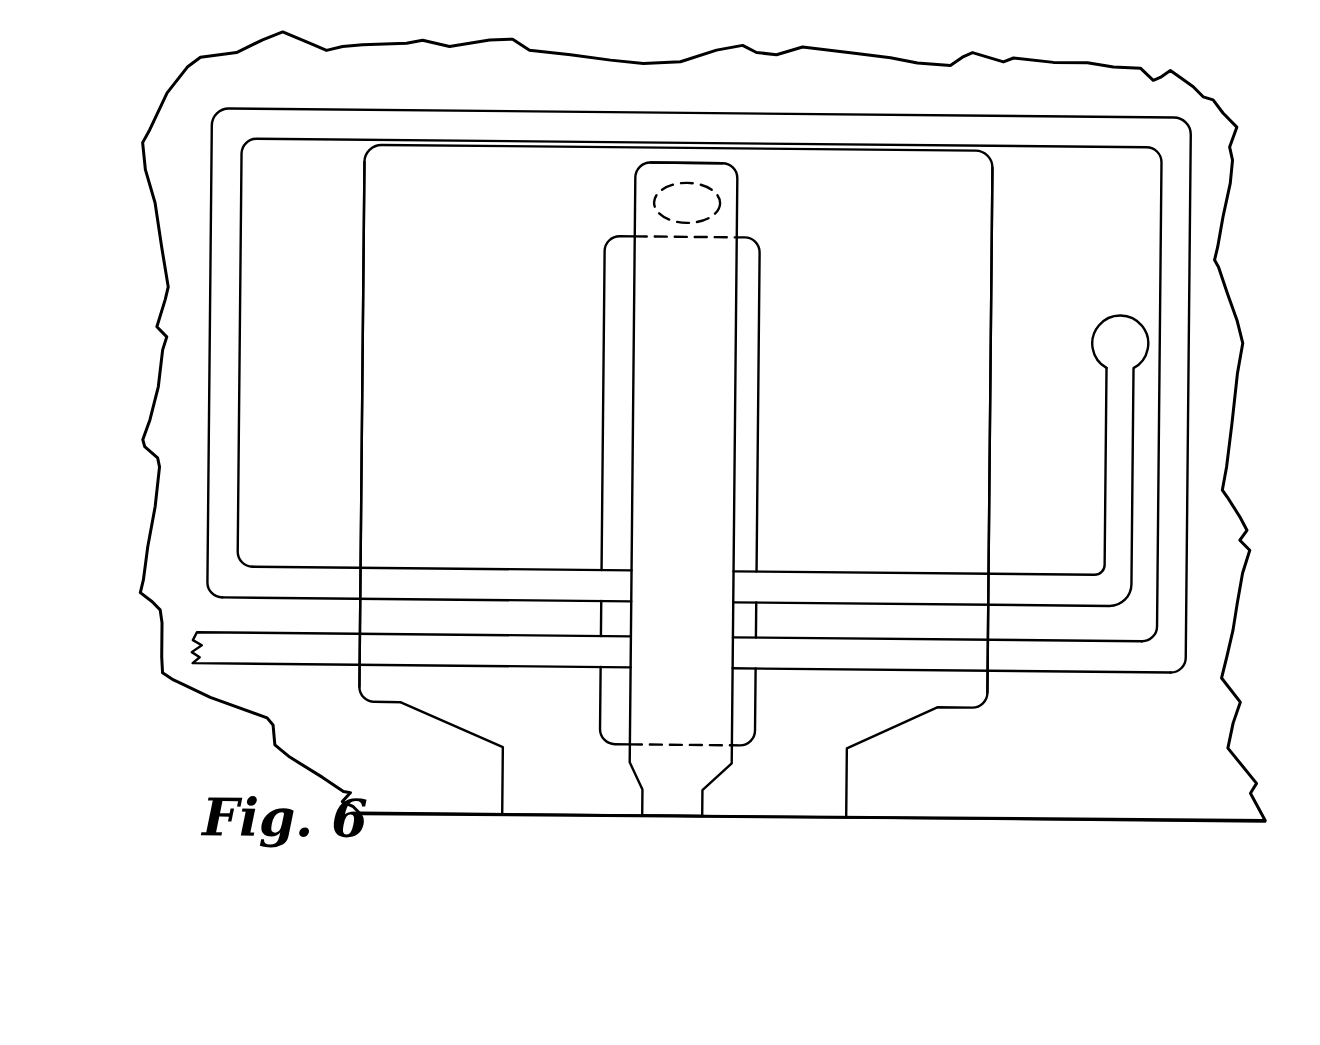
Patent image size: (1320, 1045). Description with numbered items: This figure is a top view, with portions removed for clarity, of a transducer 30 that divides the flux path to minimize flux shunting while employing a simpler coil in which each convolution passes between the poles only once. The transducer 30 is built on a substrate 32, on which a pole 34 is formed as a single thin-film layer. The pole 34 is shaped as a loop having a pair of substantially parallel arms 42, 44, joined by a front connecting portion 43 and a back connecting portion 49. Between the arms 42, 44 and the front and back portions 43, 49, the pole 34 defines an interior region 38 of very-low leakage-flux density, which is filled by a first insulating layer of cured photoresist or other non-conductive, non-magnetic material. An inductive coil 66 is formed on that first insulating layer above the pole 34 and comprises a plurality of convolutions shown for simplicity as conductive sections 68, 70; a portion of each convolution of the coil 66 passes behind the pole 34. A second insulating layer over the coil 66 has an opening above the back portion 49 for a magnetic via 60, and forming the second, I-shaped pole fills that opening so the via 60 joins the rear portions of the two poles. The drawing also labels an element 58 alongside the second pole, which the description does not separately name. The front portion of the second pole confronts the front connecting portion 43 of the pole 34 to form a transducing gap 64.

The transducer 30 is at (483, 752).
The substrate 32 is at (1236, 718).
The pole 34 is at (406, 706).
The interior region 38 is at (748, 432).
The arm 42 is at (362, 375).
The front connecting portion 43 is at (577, 818).
The arm 44 is at (992, 427).
The back connecting portion 49 is at (692, 155).
The sleeve 58 is at (737, 302).
The magnetic via 60 is at (711, 202).
The transducing gap 64 is at (686, 825).
The inductive coil 66 is at (969, 124).
The conductive section 68 is at (1056, 549).
The conductive section 70 is at (1027, 670).